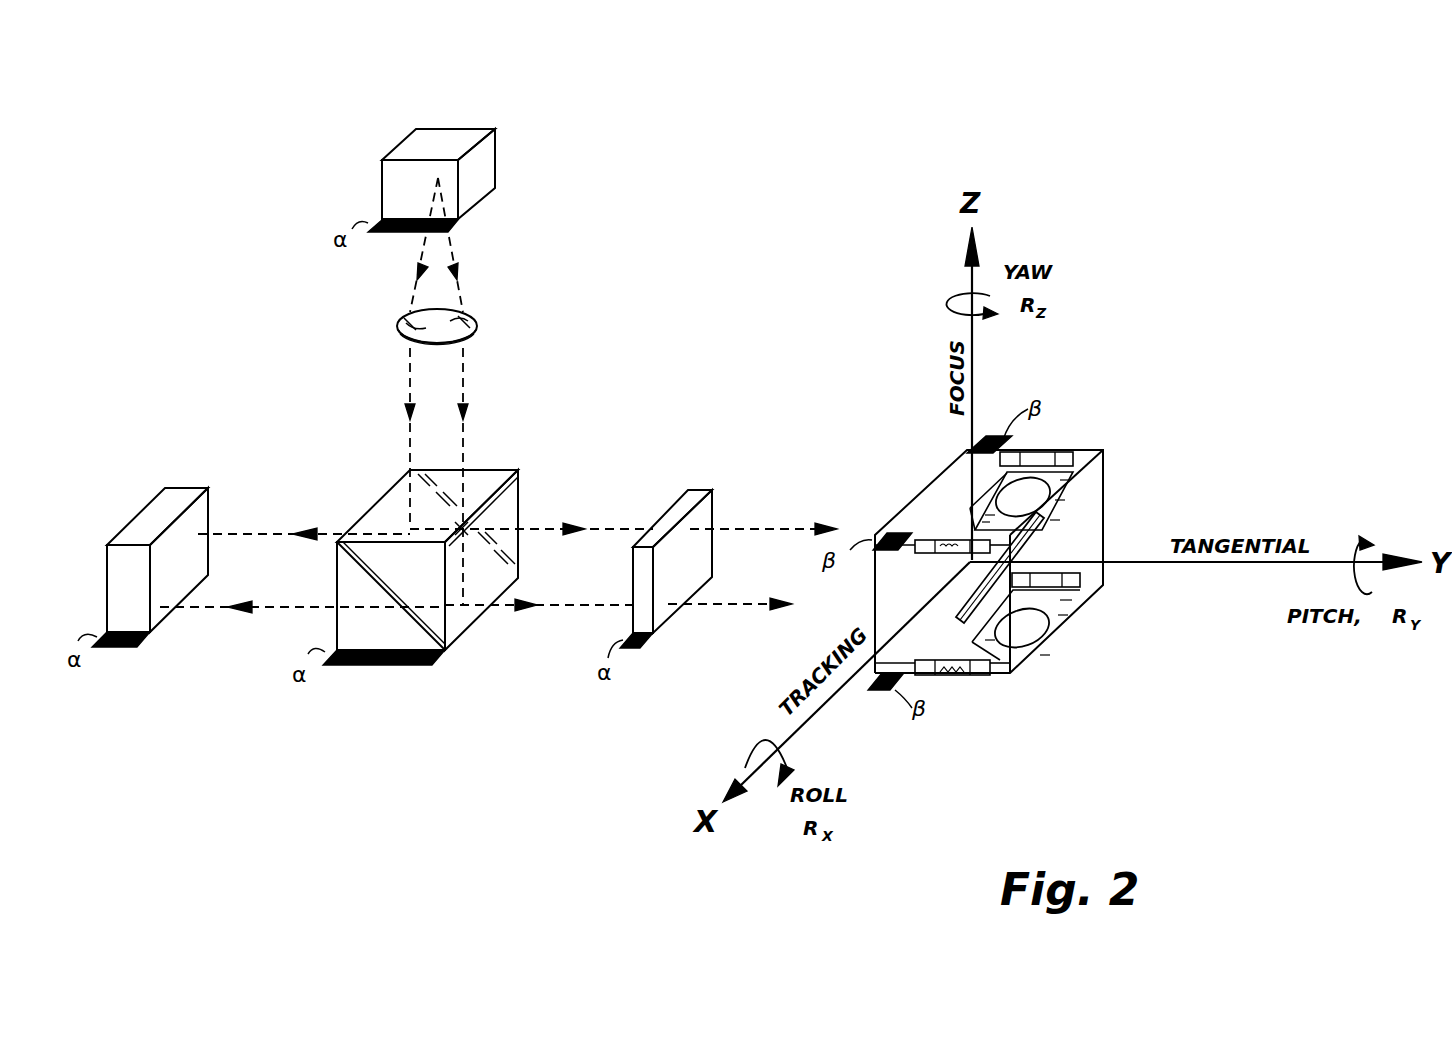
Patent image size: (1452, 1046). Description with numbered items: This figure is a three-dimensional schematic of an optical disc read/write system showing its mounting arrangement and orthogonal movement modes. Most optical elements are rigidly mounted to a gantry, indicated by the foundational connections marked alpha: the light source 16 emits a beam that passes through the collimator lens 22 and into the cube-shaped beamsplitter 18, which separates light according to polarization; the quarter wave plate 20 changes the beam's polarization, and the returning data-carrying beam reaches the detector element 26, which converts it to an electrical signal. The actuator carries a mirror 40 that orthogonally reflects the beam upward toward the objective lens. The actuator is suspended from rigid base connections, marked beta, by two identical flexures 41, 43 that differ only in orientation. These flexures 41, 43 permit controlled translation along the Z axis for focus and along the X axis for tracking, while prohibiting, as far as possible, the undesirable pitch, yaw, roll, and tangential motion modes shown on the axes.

The light source 16 is at (464, 133).
The beamsplitter 18 is at (363, 512).
The quarter wave plate 20 is at (695, 498).
The collimator lens 22 is at (477, 326).
The detector element 26 is at (175, 498).
The mirror 40 is at (960, 602).
The flexure 41 is at (1086, 450).
The flexure 43 is at (1020, 664).